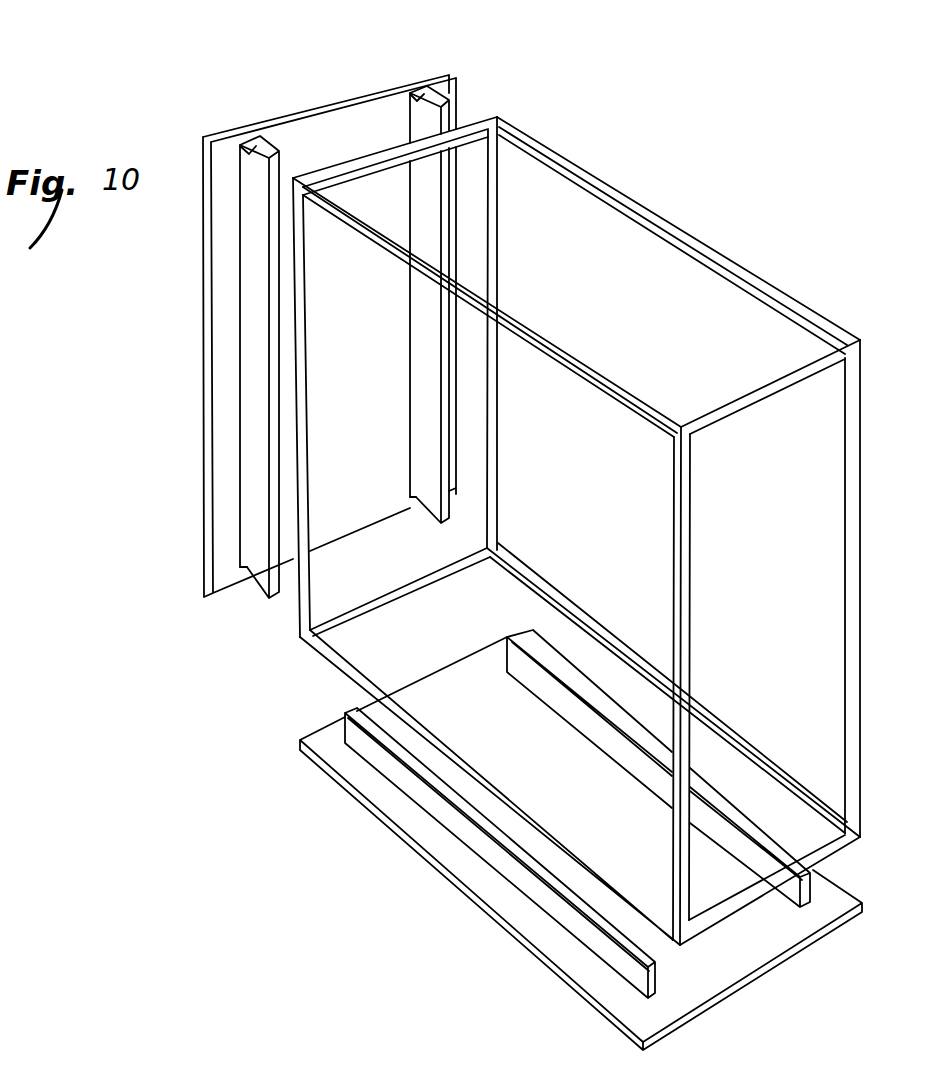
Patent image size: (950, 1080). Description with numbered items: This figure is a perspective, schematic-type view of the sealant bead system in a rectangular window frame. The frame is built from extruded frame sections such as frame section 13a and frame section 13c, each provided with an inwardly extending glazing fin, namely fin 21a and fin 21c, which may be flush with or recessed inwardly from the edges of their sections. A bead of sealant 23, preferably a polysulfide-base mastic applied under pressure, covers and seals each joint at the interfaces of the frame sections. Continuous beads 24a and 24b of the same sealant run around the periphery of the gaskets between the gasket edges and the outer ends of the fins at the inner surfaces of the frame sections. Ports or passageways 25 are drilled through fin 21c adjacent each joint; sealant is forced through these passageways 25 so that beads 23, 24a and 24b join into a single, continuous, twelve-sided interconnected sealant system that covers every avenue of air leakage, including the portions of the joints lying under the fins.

The frame section 13a is at (445, 852).
The frame section 13c is at (216, 432).
The glazing fin 21a is at (590, 932).
The glazing fin 21c is at (434, 126).
The bead of sealant 23 is at (352, 173).
The continuous sealant bead 24a is at (538, 331).
The continuous sealant bead 24b is at (628, 204).
The passageways 25 is at (247, 151).